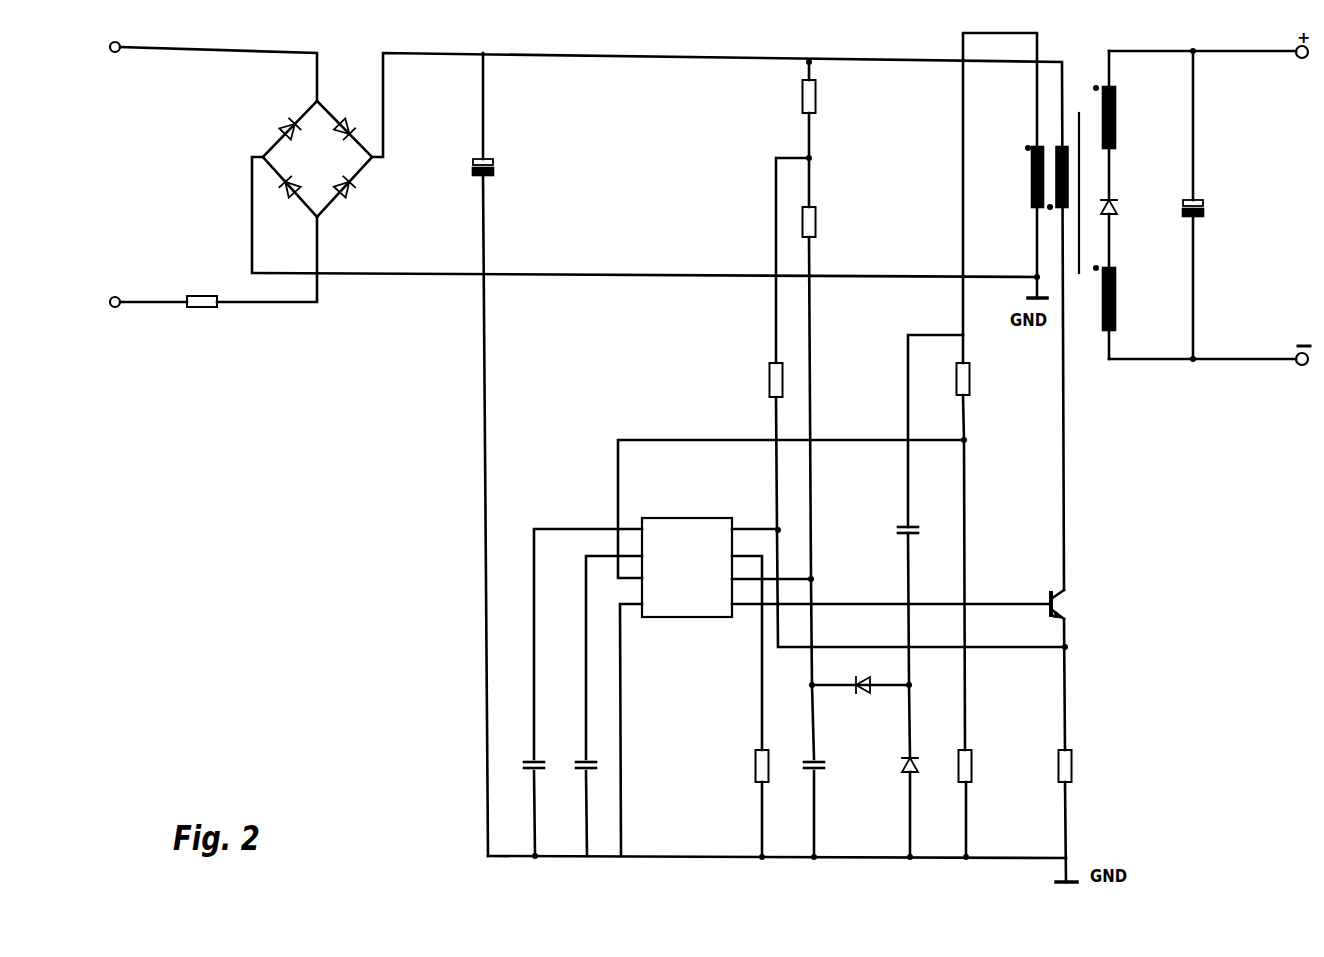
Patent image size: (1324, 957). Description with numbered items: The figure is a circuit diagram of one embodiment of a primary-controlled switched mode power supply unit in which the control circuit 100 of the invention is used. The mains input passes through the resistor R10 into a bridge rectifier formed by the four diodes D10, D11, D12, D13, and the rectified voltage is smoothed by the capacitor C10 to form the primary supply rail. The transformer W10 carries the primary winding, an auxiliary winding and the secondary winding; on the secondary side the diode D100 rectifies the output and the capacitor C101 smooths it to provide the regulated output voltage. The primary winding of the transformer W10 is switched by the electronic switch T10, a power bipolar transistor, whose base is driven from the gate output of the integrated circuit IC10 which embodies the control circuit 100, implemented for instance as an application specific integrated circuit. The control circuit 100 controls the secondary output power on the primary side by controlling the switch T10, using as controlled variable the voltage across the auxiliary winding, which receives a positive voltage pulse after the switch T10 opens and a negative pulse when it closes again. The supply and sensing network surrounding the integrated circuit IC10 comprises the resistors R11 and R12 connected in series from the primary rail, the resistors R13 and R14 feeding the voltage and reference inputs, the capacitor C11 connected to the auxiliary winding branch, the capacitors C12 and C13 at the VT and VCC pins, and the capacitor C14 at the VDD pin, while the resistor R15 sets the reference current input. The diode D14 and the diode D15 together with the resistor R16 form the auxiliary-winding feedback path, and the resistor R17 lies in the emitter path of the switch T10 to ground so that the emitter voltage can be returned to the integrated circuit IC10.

The input resistor R10 is at (202, 283).
The rectifier diode D10 is at (283, 119).
The rectifier diode D11 is at (297, 184).
The rectifier diode D12 is at (350, 119).
The rectifier diode D13 is at (352, 192).
The smoothing capacitor C10 is at (465, 454).
The resistor R11 is at (793, 110).
The resistor R12 is at (823, 368).
The resistor R13 is at (900, 402).
The resistor R14 is at (983, 236).
The capacitor C11 is at (912, 546).
The control integrated circuit IC10 is at (689, 571).
The control circuit 100 is at (694, 607).
The capacitor C12 is at (571, 692).
The capacitor C13 is at (599, 706).
The capacitor C14 is at (801, 801).
The resistor R15 is at (750, 706).
The diode D14 is at (861, 675).
The diode D15 is at (895, 801).
The resistor R16 is at (952, 801).
The resistor R17 is at (1047, 814).
The electronic switch T10 is at (1085, 670).
The transformer W10 is at (1052, 205).
The secondary rectifier diode D100 is at (1124, 205).
The output capacitor C101 is at (1214, 205).